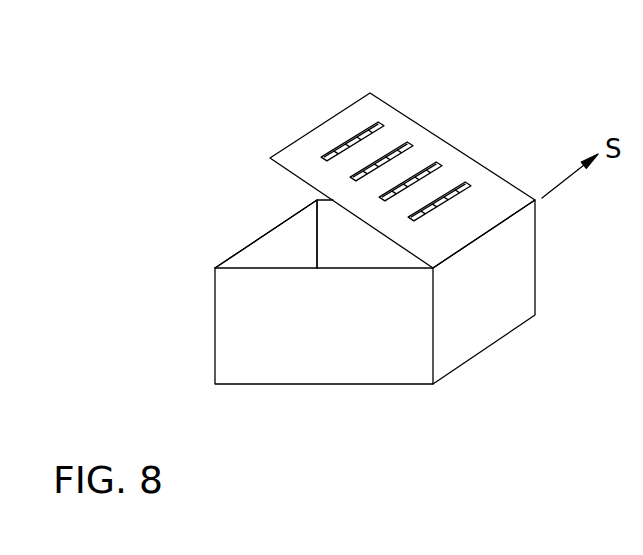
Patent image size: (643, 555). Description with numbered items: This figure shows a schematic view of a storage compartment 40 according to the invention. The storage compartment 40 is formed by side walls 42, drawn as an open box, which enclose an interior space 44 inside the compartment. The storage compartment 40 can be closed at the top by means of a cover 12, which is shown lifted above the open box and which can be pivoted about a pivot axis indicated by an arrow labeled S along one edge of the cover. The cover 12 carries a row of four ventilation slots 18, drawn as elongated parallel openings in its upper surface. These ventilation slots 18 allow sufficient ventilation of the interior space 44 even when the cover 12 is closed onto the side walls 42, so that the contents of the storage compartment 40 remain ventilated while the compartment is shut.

The cover 12 is at (495, 199).
The ventilation slots 18 is at (392, 148).
The storage compartment 40 is at (175, 352).
The side walls 42 is at (317, 343).
The interior space 44 is at (279, 261).